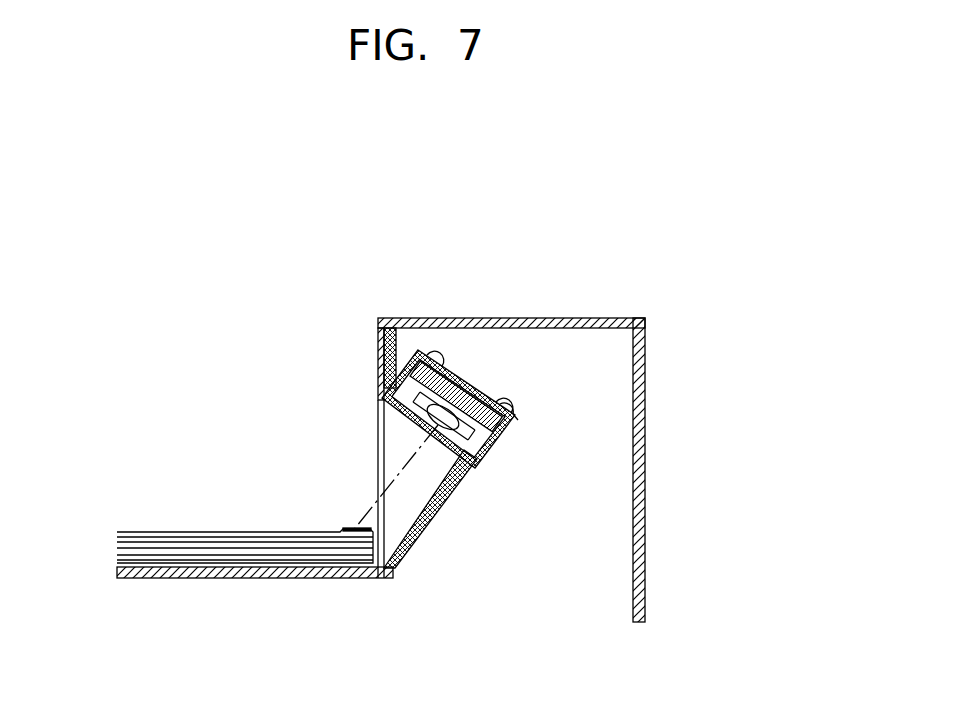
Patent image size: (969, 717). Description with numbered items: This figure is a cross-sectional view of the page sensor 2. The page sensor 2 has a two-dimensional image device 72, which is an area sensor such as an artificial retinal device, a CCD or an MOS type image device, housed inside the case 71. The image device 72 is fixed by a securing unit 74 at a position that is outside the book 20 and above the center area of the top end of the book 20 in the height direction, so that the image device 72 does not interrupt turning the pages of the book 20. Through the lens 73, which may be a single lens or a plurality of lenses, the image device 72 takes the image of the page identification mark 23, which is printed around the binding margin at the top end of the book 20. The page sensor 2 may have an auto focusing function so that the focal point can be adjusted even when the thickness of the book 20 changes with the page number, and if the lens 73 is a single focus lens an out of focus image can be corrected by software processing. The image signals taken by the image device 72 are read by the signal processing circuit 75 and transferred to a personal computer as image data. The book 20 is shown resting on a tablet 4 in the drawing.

The page sensor 2 is at (449, 246).
The case 71 is at (378, 318).
The image device 72 is at (458, 383).
The lens 73 is at (462, 405).
The securing unit 74 is at (461, 463).
The signal processing circuit 75 is at (516, 415).
The book 20 is at (153, 531).
The page identification mark 23 is at (353, 527).
The tablet 4 is at (202, 578).